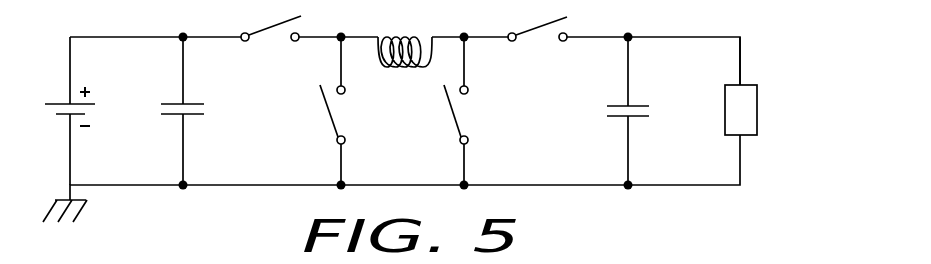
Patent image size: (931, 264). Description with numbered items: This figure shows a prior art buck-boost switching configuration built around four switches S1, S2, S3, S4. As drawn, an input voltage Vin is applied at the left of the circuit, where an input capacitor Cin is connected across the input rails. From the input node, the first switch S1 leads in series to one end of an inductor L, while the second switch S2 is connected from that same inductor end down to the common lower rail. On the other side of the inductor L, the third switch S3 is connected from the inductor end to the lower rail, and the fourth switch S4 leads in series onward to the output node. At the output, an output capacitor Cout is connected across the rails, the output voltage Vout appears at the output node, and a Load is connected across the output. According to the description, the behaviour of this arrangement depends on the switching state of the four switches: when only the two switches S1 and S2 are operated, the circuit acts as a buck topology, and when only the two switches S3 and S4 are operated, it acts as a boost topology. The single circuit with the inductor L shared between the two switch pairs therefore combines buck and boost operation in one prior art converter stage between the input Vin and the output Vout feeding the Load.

The input voltage source Vin is at (70, 99).
The input capacitor Cin is at (169, 111).
The switch S1 is at (271, 23).
The switch S2 is at (321, 111).
The switch S3 is at (474, 111).
The switch S4 is at (537, 24).
The inductor L is at (405, 41).
The output capacitor Cout is at (642, 111).
The output voltage Vout is at (736, 47).
The load Load is at (767, 110).